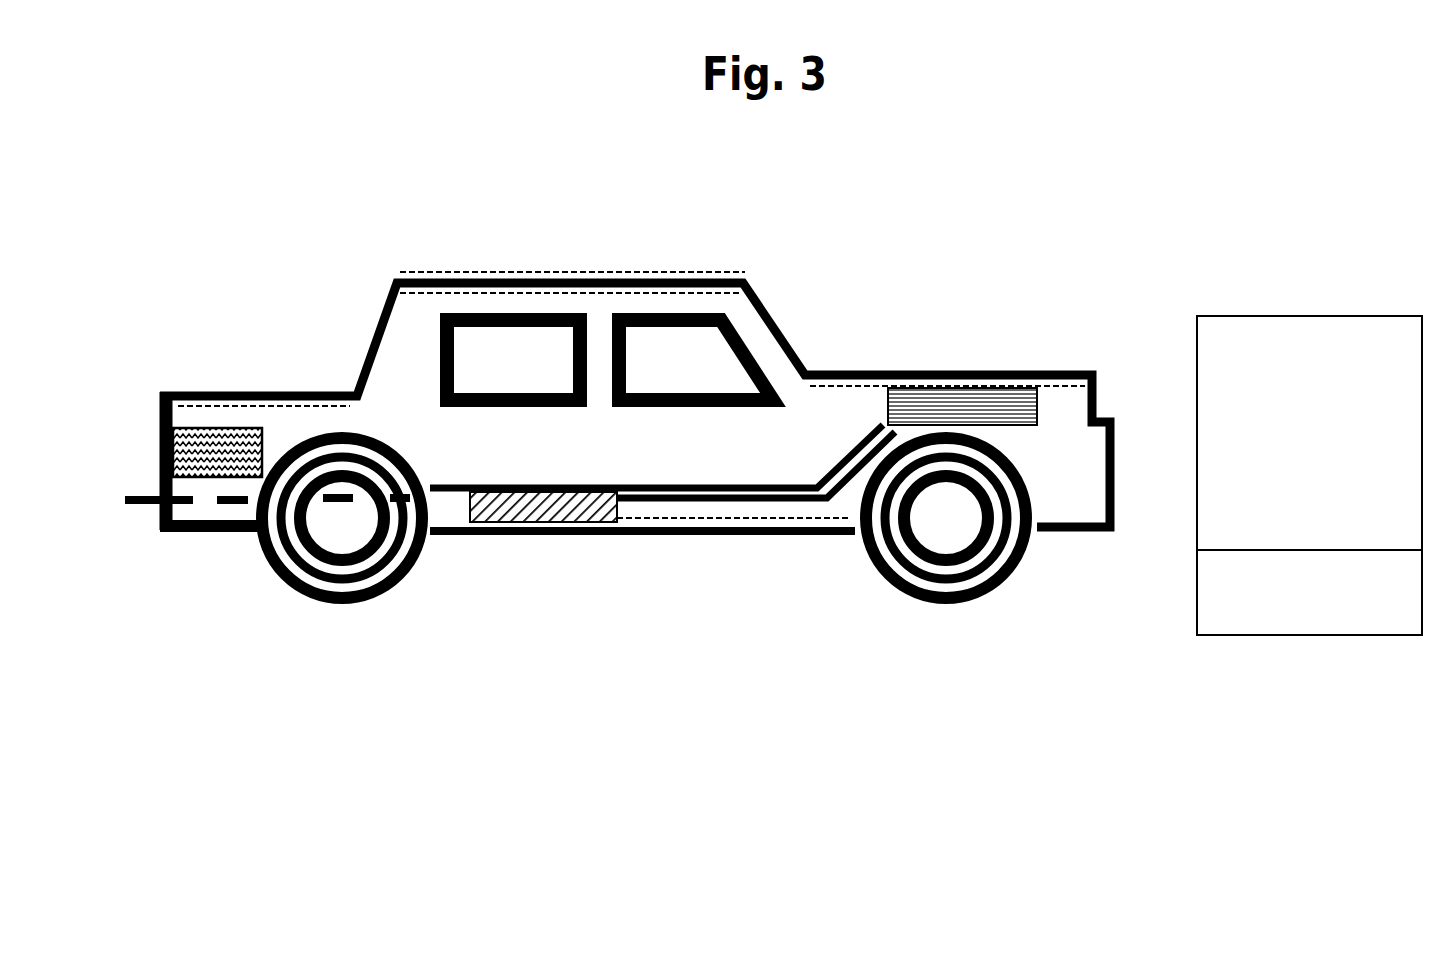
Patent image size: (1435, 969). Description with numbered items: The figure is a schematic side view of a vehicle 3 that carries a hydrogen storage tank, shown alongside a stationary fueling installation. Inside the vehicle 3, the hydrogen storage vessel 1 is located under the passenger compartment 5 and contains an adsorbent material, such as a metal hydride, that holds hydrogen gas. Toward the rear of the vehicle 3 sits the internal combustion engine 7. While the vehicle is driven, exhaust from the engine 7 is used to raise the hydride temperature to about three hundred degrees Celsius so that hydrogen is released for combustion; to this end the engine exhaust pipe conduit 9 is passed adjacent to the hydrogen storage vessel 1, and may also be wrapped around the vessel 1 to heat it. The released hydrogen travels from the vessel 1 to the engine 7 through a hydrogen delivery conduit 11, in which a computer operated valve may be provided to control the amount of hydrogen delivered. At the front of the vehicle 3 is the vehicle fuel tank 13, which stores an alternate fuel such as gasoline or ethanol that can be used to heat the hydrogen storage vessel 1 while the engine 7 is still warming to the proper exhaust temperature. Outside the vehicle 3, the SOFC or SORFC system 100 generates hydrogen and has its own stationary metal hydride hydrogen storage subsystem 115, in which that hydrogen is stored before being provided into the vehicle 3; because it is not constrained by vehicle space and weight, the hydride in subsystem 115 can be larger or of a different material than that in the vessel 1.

The hydrogen storage vessel 1 is at (520, 510).
The vehicle 3 is at (968, 285).
The passenger compartment 5 is at (679, 315).
The internal combustion engine 7 is at (990, 400).
The engine exhaust pipe conduit 9 is at (175, 502).
The hydrogen delivery conduit 11 is at (740, 500).
The vehicle fuel tank 13 is at (236, 442).
The SOFC or SORFC system 100 is at (1270, 328).
The metal hydride hydrogen storage subsystem 115 is at (1358, 622).